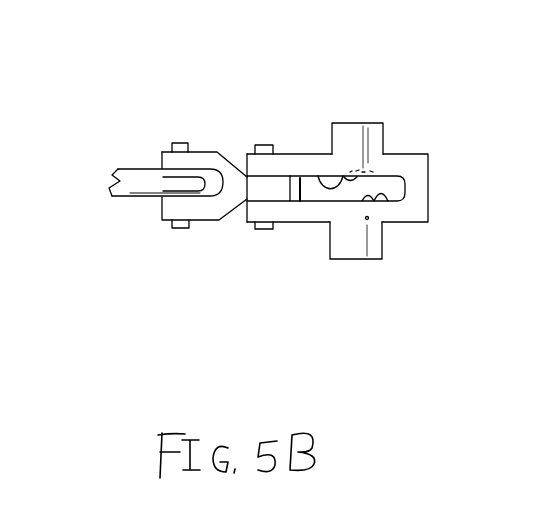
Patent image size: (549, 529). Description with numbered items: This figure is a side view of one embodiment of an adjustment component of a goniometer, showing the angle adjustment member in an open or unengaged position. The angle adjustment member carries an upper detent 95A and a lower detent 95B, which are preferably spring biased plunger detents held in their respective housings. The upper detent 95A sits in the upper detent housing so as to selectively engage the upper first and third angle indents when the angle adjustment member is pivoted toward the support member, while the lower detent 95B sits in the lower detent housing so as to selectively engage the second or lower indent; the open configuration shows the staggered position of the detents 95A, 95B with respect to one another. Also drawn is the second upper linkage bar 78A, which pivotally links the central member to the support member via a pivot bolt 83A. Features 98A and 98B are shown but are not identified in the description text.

The second upper linkage bar 78A is at (140, 169).
The pivot bolt 83A is at (178, 142).
The upper detent 95A is at (381, 199).
The lower detent 95B is at (318, 176).
The lower port 98A is at (340, 241).
The upper port 98B is at (379, 123).